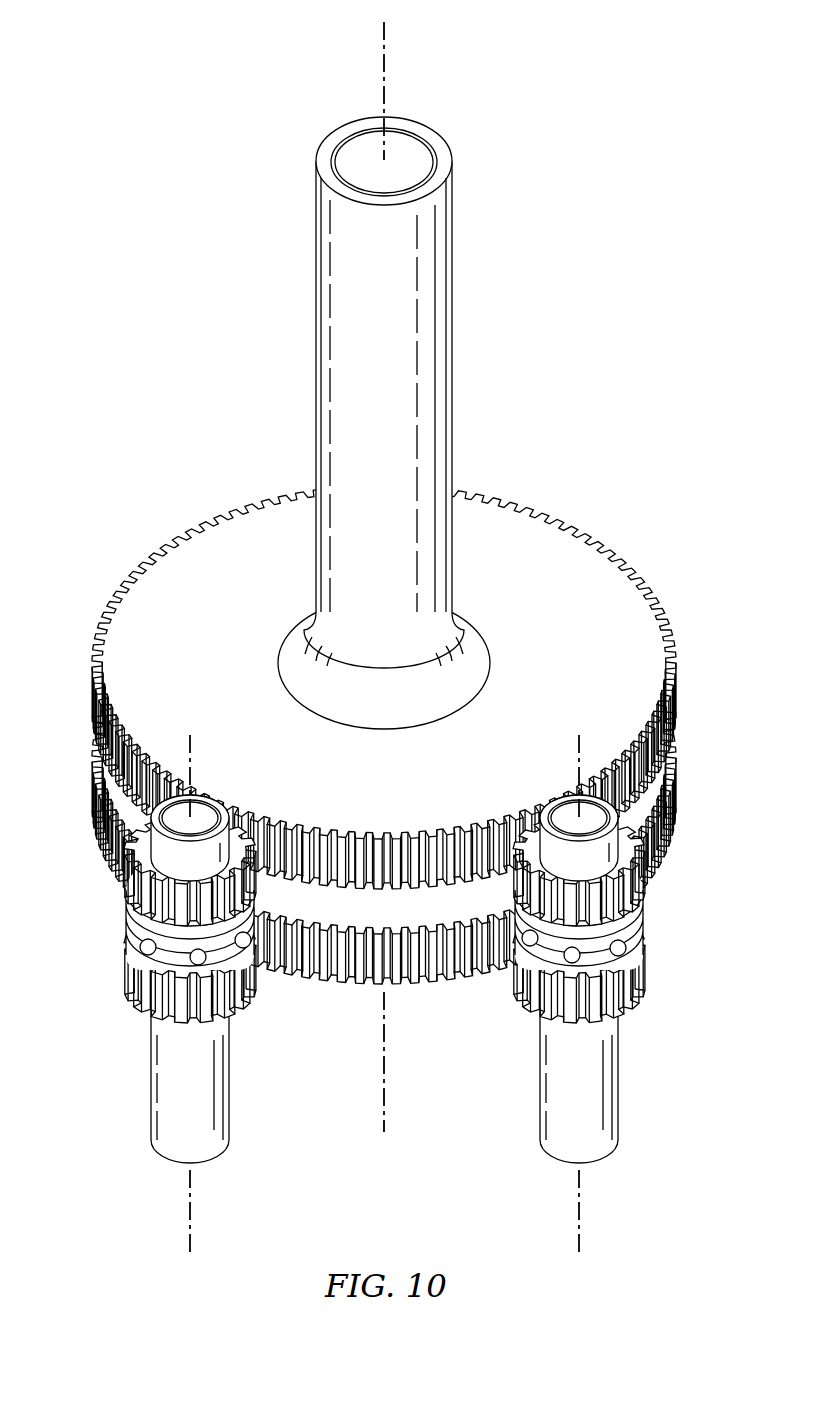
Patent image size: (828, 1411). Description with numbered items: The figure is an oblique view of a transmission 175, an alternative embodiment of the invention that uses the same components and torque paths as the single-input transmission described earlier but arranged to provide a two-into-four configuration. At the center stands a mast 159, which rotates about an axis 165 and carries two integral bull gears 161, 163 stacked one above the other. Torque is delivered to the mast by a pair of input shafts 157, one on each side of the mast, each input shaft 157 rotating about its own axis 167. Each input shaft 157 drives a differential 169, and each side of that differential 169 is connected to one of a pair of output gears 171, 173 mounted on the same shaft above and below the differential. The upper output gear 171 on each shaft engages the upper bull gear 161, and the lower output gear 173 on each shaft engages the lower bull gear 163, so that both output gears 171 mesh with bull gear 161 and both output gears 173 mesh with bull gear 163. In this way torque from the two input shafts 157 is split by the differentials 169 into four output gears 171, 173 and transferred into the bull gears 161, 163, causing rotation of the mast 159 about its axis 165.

The input shaft 157 is at (150, 1088).
The mast 159 is at (316, 343).
The bull gear 161 is at (92, 683).
The bull gear 163 is at (92, 783).
The axis 165 is at (382, 1068).
The axis 167 is at (187, 1240).
The differential 169 is at (116, 926).
The output gear 171 is at (123, 877).
The output gear 173 is at (124, 977).
The transmission 175 is at (255, 60).